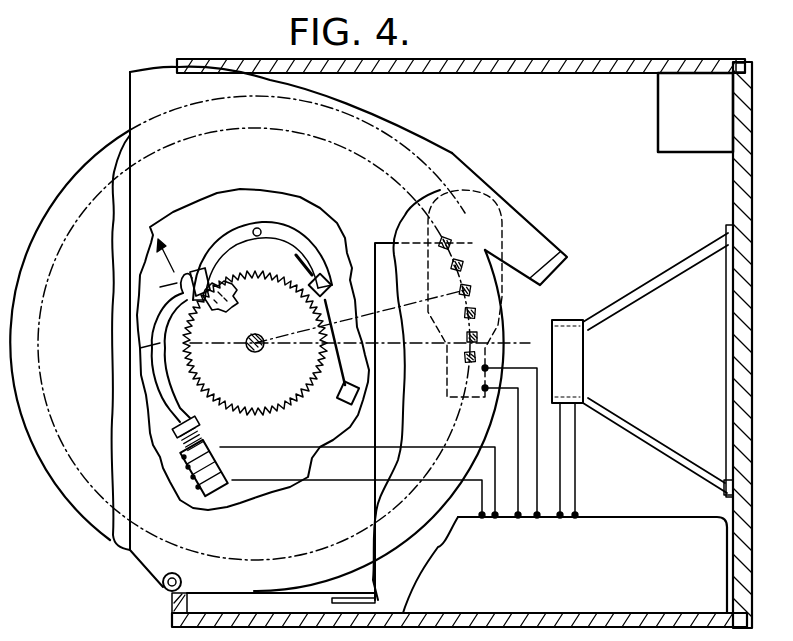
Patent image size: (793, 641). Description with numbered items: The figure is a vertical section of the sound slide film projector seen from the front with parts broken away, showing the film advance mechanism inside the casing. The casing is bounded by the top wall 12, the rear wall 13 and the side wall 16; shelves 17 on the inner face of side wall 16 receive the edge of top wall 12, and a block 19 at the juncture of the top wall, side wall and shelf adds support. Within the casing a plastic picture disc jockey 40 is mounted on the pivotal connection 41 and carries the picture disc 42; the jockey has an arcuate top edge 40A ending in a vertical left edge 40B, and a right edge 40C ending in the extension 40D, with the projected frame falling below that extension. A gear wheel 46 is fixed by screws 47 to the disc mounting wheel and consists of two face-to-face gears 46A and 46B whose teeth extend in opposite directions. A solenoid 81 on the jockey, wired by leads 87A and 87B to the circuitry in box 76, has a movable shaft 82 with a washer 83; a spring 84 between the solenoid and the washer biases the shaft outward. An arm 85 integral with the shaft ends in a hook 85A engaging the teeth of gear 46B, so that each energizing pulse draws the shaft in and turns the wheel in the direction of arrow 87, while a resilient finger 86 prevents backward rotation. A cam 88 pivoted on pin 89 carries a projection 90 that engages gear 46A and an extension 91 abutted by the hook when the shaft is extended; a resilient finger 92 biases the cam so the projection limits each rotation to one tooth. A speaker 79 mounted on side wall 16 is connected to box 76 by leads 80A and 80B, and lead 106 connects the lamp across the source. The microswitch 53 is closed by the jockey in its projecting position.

The top wall 12 is at (528, 60).
The rear wall 13 is at (723, 168).
The side wall 16 is at (741, 201).
The shelves 17 is at (739, 62).
The block 19 is at (685, 93).
The picture disc jockey 40 is at (456, 155).
The arcuate top edge 40A is at (332, 101).
The left edge 40B is at (133, 213).
The right edge 40C is at (366, 268).
The extension 40D is at (533, 227).
The pivotal connection 41 is at (162, 583).
The picture disc 42 is at (60, 195).
The gear wheel 46 is at (331, 334).
The gear 46A is at (235, 298).
The gear 46B is at (268, 396).
The screws 47 is at (262, 352).
The base 53 is at (392, 592).
The box 76 is at (697, 533).
The speaker 79 is at (690, 272).
The lead 80A is at (576, 480).
The lead 80B is at (563, 467).
The solenoid 81 is at (217, 487).
The movable shaft 82 is at (218, 437).
The washer 83 is at (160, 428).
The spring 84 is at (200, 432).
The arm 85 is at (160, 377).
The hook 85A is at (160, 287).
The resilient finger 86 is at (340, 396).
The arrow 87 is at (233, 362).
The lead 87A is at (498, 454).
The lead 87B is at (502, 471).
The cam 88 is at (220, 246).
The pin 89 is at (262, 226).
The projection 90 is at (211, 277).
The extension 91 is at (182, 272).
The resilient finger 92 is at (298, 267).
The lead 106 is at (538, 517).